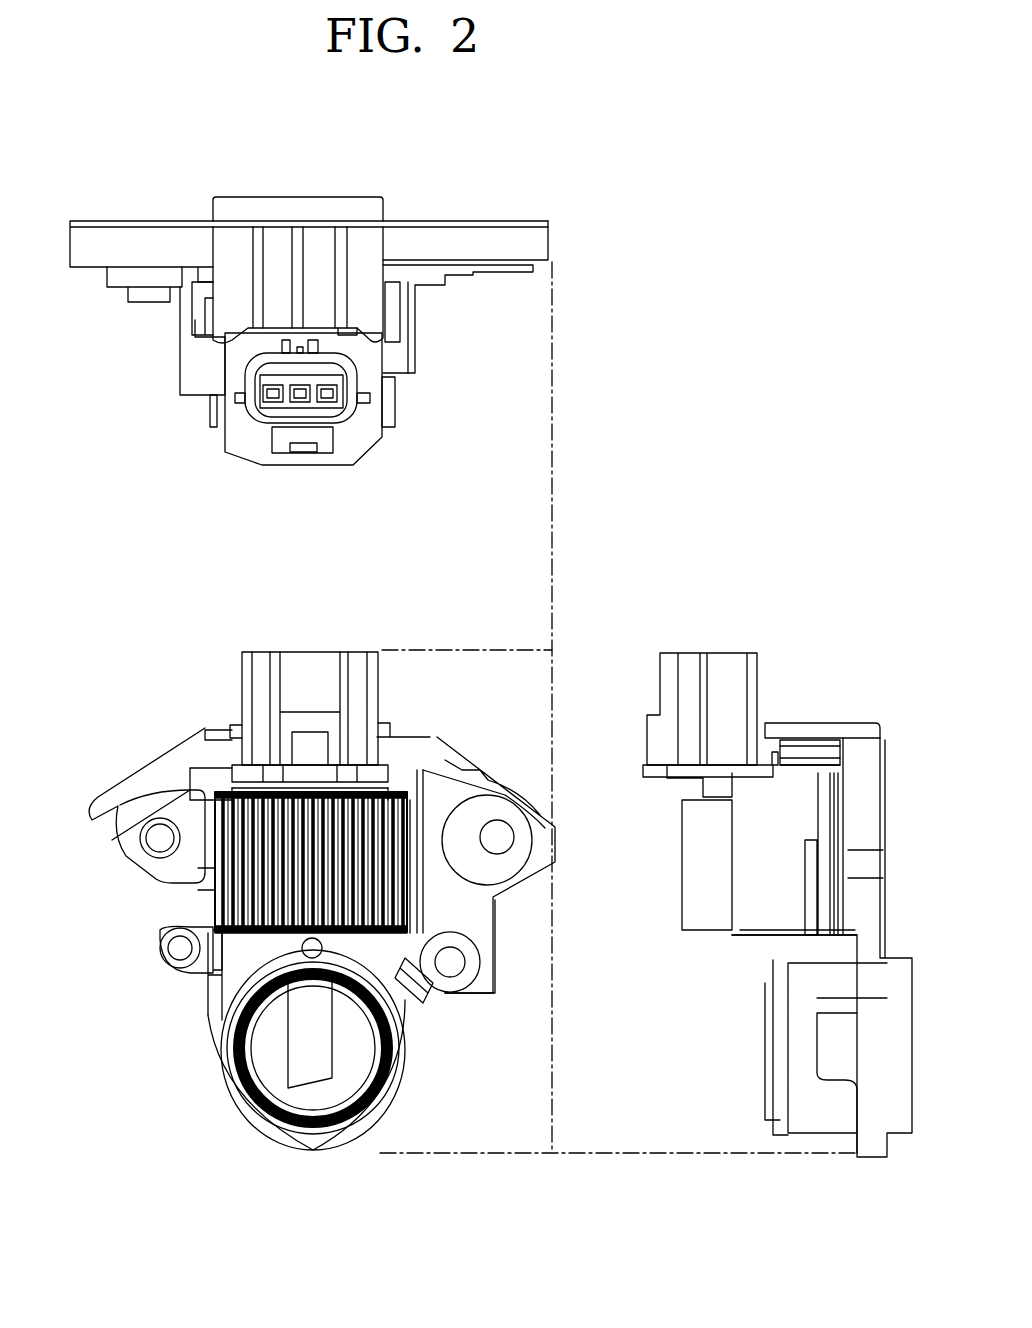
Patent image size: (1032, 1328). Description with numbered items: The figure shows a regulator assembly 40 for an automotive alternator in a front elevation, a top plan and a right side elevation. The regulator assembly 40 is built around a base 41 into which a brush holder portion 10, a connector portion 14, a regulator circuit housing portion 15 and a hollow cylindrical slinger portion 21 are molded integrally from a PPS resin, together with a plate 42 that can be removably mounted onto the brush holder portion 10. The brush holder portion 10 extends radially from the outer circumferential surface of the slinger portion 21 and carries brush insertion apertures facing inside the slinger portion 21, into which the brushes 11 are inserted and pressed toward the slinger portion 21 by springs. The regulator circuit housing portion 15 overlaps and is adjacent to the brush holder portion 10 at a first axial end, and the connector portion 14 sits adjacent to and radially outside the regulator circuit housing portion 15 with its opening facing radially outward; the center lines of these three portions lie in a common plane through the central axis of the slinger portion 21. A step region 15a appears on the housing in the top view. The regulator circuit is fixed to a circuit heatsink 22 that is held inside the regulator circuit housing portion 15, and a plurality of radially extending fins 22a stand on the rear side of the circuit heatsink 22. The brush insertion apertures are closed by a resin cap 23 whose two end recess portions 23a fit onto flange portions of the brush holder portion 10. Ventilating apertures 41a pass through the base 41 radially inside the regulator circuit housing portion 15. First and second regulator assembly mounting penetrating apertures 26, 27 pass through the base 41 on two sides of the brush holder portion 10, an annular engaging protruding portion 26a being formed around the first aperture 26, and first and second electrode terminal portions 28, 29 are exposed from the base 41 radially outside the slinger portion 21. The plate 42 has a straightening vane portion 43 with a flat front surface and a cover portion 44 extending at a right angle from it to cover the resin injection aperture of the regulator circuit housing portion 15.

The brush holder portion 10 is at (323, 330).
The brushes 11 is at (302, 1052).
The connector portion 14 is at (247, 417).
The regulator circuit housing portion 15 is at (198, 368).
The holder step portion 15a is at (200, 320).
The slinger portion 21 is at (212, 210).
The circuit heatsink 22 is at (402, 400).
The fins 22a is at (213, 408).
The resin cap 23 is at (817, 750).
The end recess portions 23a is at (800, 745).
The first regulator assembly mounting penetrating aperture 26 is at (142, 832).
The engaging protruding portion 26a is at (125, 297).
The second regulator assembly mounting penetrating aperture 27 is at (502, 845).
The first electrode terminal portion 28 is at (165, 958).
The second electrode terminal portion 29 is at (470, 965).
The regulator assembly 40 is at (132, 153).
The base 41 is at (420, 338).
The ventilating apertures 41a is at (427, 1003).
The plate 42 is at (505, 156).
The straightening vane portion 43 is at (455, 235).
The cover portion 44 is at (362, 250).